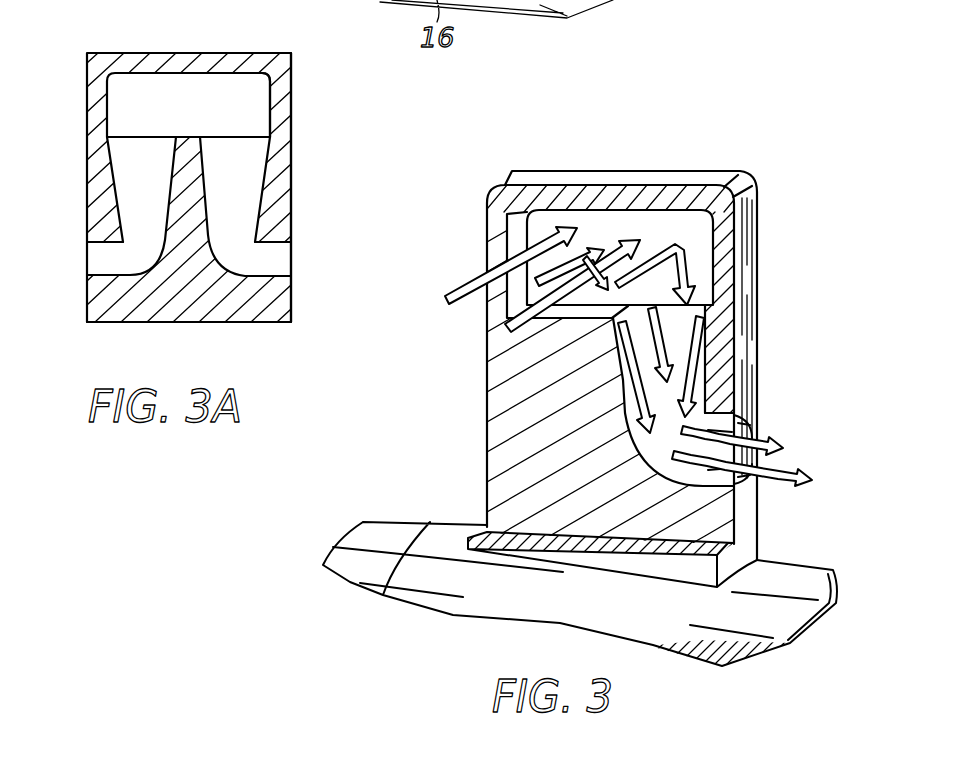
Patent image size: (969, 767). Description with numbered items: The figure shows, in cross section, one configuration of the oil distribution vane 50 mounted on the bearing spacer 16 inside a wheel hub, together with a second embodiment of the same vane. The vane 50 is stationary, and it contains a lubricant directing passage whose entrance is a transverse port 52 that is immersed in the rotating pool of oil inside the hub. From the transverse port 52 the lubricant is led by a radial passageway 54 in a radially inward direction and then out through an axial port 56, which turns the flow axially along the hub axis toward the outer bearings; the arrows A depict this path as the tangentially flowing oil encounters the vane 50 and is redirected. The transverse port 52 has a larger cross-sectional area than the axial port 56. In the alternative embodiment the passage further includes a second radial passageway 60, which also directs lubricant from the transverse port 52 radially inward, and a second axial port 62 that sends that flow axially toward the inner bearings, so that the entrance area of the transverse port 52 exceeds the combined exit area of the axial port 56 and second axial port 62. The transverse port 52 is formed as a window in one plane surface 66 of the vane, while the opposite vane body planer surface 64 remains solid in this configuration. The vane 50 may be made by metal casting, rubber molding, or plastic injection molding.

In FIG. 3, the bearing spacer 16 is at (505, 605).
In FIG. 3A, the oil vane 50 is at (193, 44).
In FIG. 3, the oil vane 50 is at (655, 162).
In FIG. 3A, the transverse port 52 is at (253, 97).
In FIG. 3, the transverse port 52 is at (590, 222).
In FIG. 3A, the radial passageway 54 is at (236, 176).
In FIG. 3, the radial passageway 54 is at (682, 340).
In FIG. 3A, the axial port 56 is at (240, 245).
In FIG. 3, the axial port 56 is at (710, 430).
In FIG. 3A, the second radial passageway 60 is at (140, 167).
In FIG. 3A, the second axial port 62 is at (102, 261).
In FIG. 3A, the vane body planer surface 64 is at (206, 115).
In FIG. 3A, the opposed plane surface 66 is at (292, 298).
In FIG. 3, the arrows A is at (792, 445).